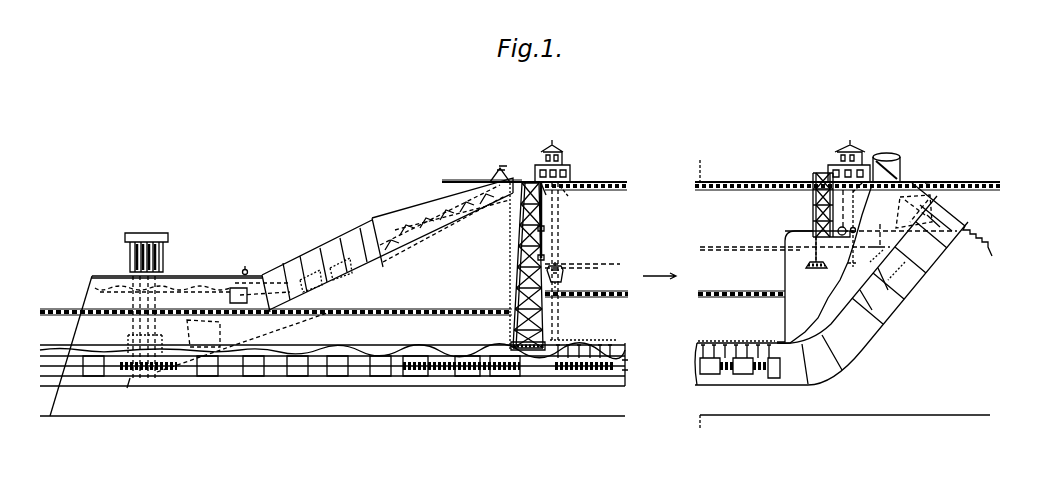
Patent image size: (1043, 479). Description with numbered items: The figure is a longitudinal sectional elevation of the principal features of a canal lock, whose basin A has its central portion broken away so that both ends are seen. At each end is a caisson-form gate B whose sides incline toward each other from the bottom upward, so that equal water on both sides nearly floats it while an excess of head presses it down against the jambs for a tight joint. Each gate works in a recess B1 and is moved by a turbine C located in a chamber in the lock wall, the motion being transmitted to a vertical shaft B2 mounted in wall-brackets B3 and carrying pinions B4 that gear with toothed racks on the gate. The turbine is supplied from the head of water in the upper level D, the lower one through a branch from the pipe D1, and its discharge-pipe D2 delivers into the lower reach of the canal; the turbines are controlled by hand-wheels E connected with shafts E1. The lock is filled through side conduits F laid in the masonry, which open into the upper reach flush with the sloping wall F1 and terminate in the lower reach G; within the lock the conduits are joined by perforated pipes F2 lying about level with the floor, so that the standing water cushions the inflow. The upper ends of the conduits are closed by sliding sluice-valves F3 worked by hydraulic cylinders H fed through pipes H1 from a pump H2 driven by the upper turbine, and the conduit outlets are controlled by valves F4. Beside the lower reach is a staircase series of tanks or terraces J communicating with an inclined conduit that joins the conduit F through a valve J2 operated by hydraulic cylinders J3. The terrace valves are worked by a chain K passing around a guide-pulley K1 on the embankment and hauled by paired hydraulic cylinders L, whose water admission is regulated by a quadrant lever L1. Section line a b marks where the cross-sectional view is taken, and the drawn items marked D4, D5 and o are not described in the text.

The basin of the lock A is at (659, 291).
The gate B is at (519, 237).
The recess B1 is at (549, 223).
The vertical shaft B2 is at (817, 205).
The wall-brackets B3 is at (544, 228).
The pinions B4 is at (549, 195).
The turbine C is at (563, 271).
The upper level D is at (854, 264).
The pipe D1 is at (751, 229).
The discharge-pipe D2 is at (825, 252).
The stratum line D4 is at (434, 310).
The pipe D5 is at (558, 307).
The hand-wheels E is at (570, 178).
The shafts E1 is at (562, 200).
The side conduits F is at (698, 367).
The sloping wall F1 is at (864, 290).
The pipes F2 is at (612, 340).
The sliding sluice-valves F3 is at (926, 187).
The valves F4 is at (555, 292).
The lower reach G is at (71, 346).
The hydraulic cylinders H is at (900, 164).
The pipes H1 is at (857, 220).
The pump H2 is at (857, 225).
The tanks or terraces J is at (330, 262).
The valve J2 is at (229, 338).
The hydraulic cylinders J3 is at (163, 248).
The chain K is at (489, 179).
The guide-pulley K1 is at (503, 167).
The hydraulic cylinder L is at (243, 293).
The lever with quadrant L1 is at (247, 270).
The guide line o is at (510, 258).
The line a is at (698, 164).
The line b is at (699, 429).